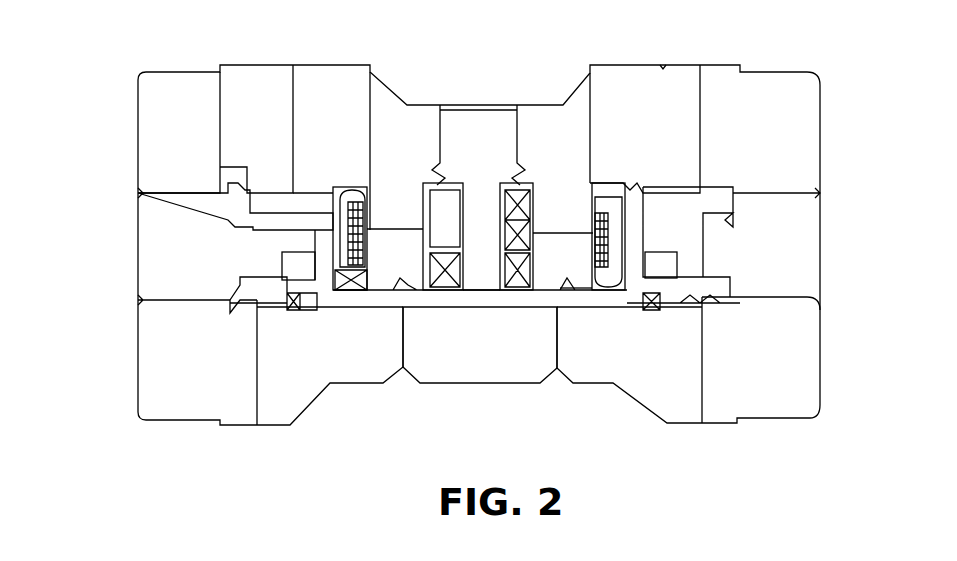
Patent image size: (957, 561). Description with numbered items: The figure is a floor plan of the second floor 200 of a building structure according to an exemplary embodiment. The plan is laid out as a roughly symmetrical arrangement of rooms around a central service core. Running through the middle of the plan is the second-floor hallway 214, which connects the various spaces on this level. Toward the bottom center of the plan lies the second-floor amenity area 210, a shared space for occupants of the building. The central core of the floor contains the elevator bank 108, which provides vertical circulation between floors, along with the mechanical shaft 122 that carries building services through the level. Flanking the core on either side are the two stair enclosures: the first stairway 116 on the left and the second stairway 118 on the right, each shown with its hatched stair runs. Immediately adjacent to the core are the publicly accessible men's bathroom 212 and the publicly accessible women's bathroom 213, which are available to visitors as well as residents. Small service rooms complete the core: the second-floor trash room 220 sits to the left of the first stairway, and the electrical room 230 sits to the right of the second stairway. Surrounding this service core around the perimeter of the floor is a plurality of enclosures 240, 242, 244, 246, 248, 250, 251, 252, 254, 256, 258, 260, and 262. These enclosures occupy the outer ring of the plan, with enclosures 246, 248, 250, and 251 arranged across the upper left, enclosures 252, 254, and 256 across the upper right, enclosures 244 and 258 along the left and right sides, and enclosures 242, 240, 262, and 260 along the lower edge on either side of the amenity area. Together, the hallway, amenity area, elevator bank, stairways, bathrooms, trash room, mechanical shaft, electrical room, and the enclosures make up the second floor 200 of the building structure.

The second floor 200 is at (90, 25).
The elevator bank 108 is at (512, 242).
The first stairway 116 is at (347, 243).
The second stairway 118 is at (610, 247).
The mechanical shaft 122 is at (450, 218).
The second-floor amenity area 210 is at (483, 367).
The publicly accessible men's bathroom 212 is at (408, 257).
The publicly accessible women's bathroom 213 is at (575, 258).
The second-floor hallway 214 is at (373, 297).
The second-floor trash room 220 is at (303, 258).
The electrical room 230 is at (657, 268).
The enclosure 240 is at (338, 352).
The enclosure 242 is at (208, 378).
The enclosure 244 is at (190, 255).
The enclosure 246 is at (188, 138).
The enclosure 248 is at (255, 127).
The enclosure 250 is at (320, 132).
The enclosure 251 is at (412, 147).
The enclosure 252 is at (553, 150).
The enclosure 254 is at (663, 128).
The enclosure 256 is at (788, 128).
The enclosure 258 is at (770, 245).
The enclosure 260 is at (760, 373).
The enclosure 262 is at (633, 360).